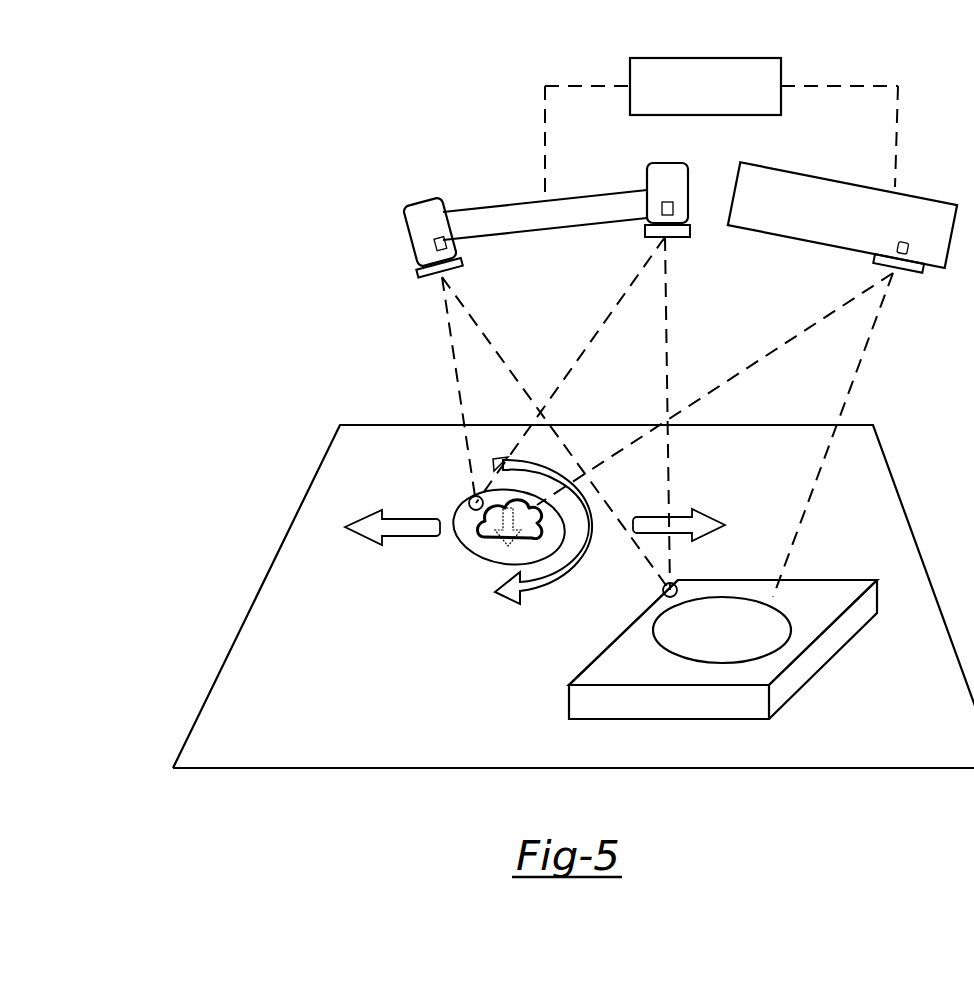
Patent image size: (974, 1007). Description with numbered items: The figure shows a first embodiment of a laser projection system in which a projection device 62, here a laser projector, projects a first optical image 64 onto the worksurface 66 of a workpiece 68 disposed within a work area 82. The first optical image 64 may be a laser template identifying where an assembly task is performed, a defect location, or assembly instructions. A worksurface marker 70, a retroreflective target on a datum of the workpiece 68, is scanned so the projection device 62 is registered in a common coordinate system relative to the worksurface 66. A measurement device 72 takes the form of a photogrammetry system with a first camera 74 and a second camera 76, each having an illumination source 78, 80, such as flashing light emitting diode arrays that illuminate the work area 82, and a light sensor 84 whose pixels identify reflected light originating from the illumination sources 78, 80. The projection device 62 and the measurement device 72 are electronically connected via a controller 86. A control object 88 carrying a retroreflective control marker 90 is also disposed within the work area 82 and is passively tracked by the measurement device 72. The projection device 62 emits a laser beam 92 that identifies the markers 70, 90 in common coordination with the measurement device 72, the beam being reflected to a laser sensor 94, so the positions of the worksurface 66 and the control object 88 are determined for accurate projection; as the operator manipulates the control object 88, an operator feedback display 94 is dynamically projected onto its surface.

The projection device 62 is at (860, 227).
The first optical image 64 is at (778, 650).
The worksurface 66 is at (823, 613).
The workpiece 68 is at (837, 635).
The worksurface marker 70 is at (662, 597).
The measurement device 72 is at (522, 172).
The first camera 74 is at (433, 238).
The second camera 76 is at (678, 194).
The illumination source 78 is at (420, 273).
The illumination source 80 is at (690, 230).
The work area 82 is at (420, 662).
The light sensor 84 is at (647, 223).
The controller 86 is at (697, 57).
The control object 88 is at (458, 513).
The control marker 90 is at (469, 498).
The laser beam 92 is at (853, 392).
The laser sensor 94 is at (912, 248).